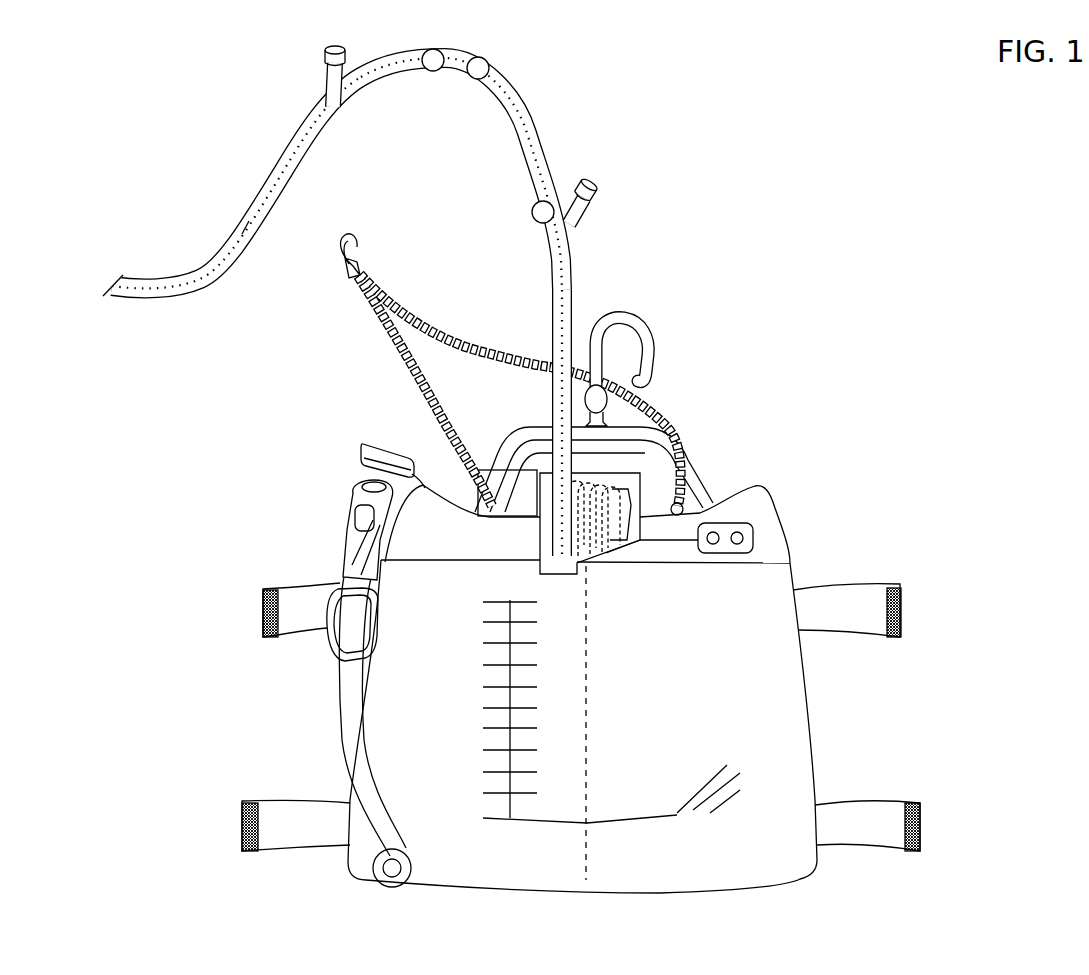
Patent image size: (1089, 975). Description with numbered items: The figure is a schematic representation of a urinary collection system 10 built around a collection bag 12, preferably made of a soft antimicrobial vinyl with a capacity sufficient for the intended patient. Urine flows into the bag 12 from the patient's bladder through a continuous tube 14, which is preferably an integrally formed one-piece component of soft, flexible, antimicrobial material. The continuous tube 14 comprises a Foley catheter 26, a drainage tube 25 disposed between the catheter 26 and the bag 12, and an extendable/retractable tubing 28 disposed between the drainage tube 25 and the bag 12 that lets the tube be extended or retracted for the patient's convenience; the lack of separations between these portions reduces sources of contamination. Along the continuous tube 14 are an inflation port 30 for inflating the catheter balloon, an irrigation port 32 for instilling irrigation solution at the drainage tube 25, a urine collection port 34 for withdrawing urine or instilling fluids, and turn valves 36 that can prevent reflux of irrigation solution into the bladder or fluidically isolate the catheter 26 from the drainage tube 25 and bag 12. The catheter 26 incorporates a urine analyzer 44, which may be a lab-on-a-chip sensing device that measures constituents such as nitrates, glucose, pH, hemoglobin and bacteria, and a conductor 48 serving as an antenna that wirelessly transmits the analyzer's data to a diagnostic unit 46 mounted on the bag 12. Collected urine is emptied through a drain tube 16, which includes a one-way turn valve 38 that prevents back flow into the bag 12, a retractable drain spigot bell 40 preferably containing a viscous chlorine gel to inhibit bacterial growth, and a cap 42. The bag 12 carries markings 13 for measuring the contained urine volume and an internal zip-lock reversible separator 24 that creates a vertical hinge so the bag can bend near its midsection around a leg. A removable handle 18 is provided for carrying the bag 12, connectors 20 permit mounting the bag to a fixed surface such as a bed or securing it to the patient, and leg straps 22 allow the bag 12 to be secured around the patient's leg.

The urinary collection system 10 is at (921, 233).
The collection bag 12 is at (823, 713).
The markings 13 is at (497, 838).
The continuous tube 14 is at (540, 148).
The drain tube 16 is at (353, 727).
The removable handle 18 is at (492, 440).
The connectors 20 is at (662, 415).
The leg straps 22 is at (920, 807).
The reversible separator 24 is at (590, 837).
The drainage tube 25 is at (573, 283).
The Foley catheter 26 is at (265, 190).
The extendable/retractable tubing 28 is at (617, 500).
The inflation port 30 is at (324, 61).
The irrigation port 32 is at (582, 213).
The urine collection port 34 is at (434, 47).
The turn valves 36 is at (535, 213).
The one-way turn valve 38 is at (328, 638).
The retractable drain spigot bell 40 is at (350, 513).
The cap 42 is at (358, 455).
The urine analyzer 44 is at (243, 234).
The diagnostic unit 46 is at (757, 530).
The conductor 48 is at (178, 283).